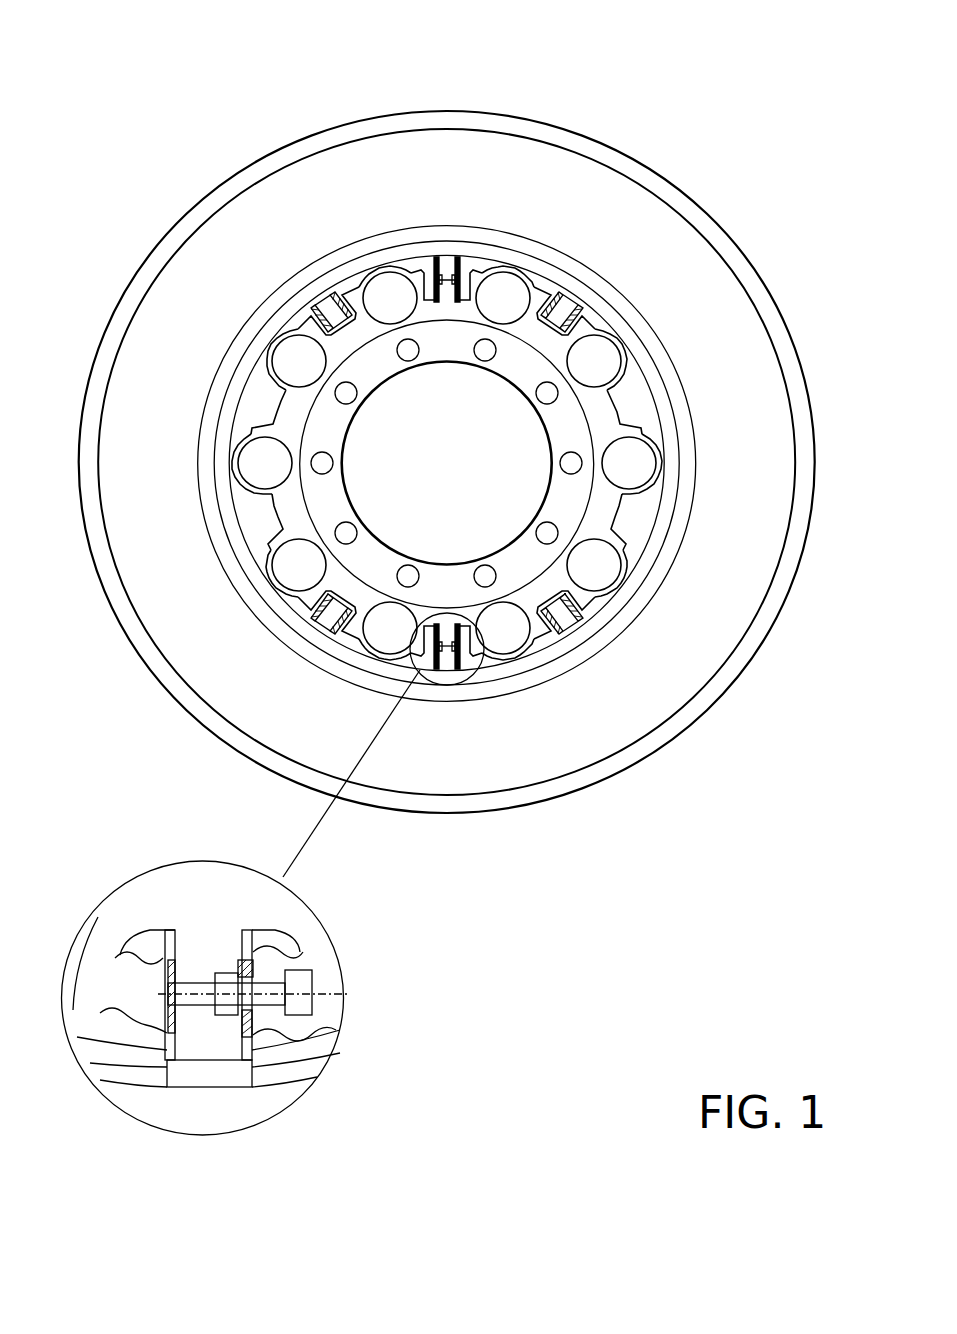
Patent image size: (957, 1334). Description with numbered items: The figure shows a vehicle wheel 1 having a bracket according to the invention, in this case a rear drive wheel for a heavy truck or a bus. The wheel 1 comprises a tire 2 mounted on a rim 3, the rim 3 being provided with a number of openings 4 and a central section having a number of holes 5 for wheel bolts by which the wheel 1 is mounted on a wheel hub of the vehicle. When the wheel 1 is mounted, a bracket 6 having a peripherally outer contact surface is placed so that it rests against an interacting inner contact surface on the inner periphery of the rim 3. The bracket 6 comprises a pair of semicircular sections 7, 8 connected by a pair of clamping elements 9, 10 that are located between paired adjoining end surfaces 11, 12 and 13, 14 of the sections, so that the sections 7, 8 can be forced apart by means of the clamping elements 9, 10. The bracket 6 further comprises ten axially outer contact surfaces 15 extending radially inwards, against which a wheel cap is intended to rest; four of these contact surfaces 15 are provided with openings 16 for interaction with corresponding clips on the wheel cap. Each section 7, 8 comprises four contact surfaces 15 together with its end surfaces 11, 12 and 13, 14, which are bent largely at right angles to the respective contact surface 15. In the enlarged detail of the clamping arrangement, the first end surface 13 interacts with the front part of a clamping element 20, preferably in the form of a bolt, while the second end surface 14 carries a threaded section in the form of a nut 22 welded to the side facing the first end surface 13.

The wheel 1 is at (707, 152).
The tire 2 is at (183, 297).
The rim 3 is at (580, 425).
The openings 4 is at (624, 520).
The holes 5 is at (557, 537).
The bracket 6 is at (583, 675).
The semicircular section 7 is at (331, 287).
The semicircular section 8 is at (557, 276).
The clamping element 9 is at (462, 238).
The clamping element 10 is at (453, 693).
The end surface 11 is at (432, 666).
The end surface 12 is at (490, 662).
The first end surface 13 is at (438, 262).
The second end surface 14 is at (450, 256).
The axially outer contact surface 15 is at (267, 522).
The openings 16 is at (330, 613).
The clamping element 20 is at (303, 984).
The nut 22 is at (231, 963).